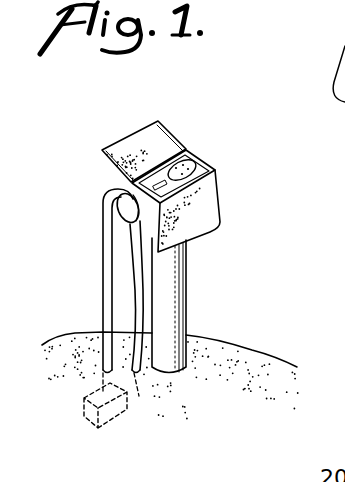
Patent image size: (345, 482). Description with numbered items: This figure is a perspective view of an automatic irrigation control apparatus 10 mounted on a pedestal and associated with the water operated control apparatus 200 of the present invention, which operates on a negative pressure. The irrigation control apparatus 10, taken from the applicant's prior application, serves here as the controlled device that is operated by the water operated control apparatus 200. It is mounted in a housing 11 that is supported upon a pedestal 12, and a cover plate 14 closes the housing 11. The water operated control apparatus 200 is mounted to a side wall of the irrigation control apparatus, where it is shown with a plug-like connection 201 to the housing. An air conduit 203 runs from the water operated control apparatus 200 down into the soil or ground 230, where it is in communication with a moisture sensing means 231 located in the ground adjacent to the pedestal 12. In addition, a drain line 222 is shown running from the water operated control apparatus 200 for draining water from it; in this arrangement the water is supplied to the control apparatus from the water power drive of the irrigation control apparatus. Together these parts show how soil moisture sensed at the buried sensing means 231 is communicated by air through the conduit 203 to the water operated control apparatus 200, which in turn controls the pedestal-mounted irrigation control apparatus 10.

The irrigation control apparatus 10 is at (202, 167).
The housing 11 is at (207, 198).
The pedestal 12 is at (177, 320).
The cover plate 14 is at (165, 139).
The water operated control apparatus 200 is at (147, 241).
The plug 201 is at (130, 212).
The air conduit 203 is at (101, 228).
The drain line 222 is at (140, 290).
The soil or ground 230 is at (263, 350).
The moisture sensing means 231 is at (116, 422).